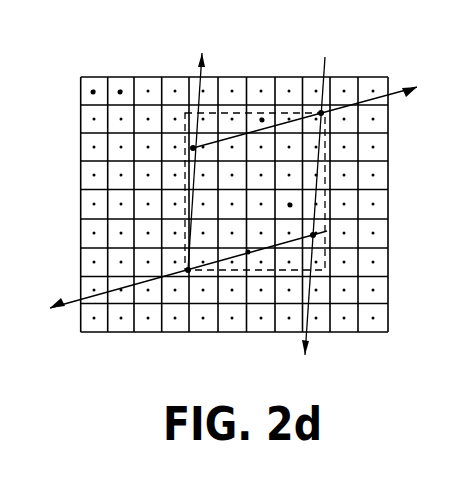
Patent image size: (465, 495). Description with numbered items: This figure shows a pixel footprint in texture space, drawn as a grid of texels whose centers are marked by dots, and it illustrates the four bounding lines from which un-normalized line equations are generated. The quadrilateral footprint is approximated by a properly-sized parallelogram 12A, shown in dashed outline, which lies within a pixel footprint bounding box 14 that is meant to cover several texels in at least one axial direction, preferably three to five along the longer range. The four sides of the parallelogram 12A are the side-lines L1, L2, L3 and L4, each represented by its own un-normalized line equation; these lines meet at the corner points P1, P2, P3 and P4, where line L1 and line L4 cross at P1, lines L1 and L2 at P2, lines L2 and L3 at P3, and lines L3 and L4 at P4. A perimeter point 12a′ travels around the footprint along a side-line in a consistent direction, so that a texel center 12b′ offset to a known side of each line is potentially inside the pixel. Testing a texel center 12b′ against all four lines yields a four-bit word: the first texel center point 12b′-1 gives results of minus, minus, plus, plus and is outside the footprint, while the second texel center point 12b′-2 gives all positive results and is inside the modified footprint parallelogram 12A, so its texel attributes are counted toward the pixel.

The pixel footprint bounding box 14 is at (323, 150).
The parallelogram 12A is at (320, 180).
The texel center 12b′ is at (120, 92).
The first texel center point 12b′-1 is at (260, 122).
The second texel center point 12b′-2 is at (290, 205).
The perimeter point 12a′ is at (248, 252).
The first side-line L1 is at (398, 92).
The second side-line L2 is at (309, 340).
The third side-line L3 is at (70, 297).
The fourth side-line L4 is at (200, 72).
The intersection point P1 is at (193, 148).
The intersection point P2 is at (322, 100).
The intersection point P3 is at (313, 235).
The intersection point P4 is at (188, 270).